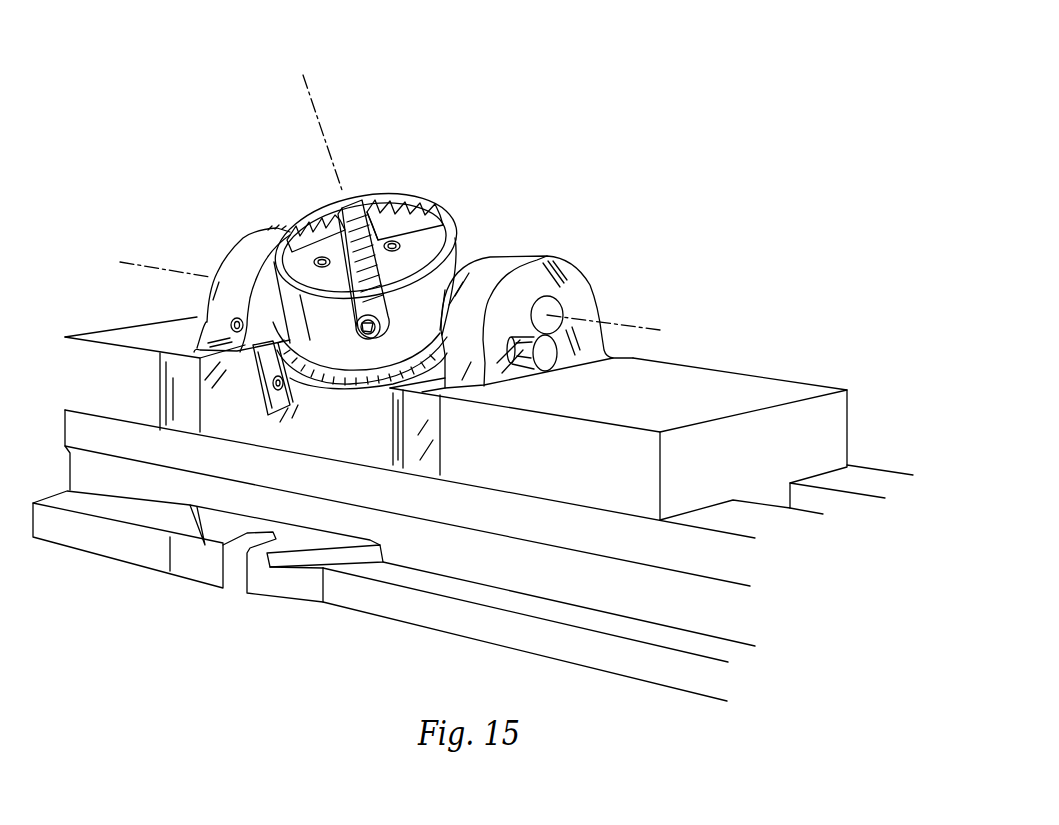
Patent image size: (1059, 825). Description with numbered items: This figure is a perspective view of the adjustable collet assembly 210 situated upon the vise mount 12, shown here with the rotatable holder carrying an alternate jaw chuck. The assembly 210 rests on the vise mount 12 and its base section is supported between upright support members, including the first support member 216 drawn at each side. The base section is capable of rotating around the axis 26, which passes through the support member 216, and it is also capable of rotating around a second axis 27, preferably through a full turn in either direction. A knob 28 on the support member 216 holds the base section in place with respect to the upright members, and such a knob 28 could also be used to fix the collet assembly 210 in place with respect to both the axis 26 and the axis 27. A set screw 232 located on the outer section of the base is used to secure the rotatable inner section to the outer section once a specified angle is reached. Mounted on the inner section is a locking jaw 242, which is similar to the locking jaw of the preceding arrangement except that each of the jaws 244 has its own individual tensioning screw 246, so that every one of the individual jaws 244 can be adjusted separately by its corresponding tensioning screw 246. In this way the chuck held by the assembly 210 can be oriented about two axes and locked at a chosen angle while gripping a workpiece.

The collet assembly 210 is at (250, 160).
The vise mount 12 is at (100, 540).
The first support member 216 is at (227, 258).
The axis 26 is at (628, 318).
The second axis 27 is at (318, 120).
The knob 28 is at (555, 372).
The set screw 232 is at (276, 395).
The locking jaw 242 is at (417, 317).
The jaws 244 is at (393, 213).
The tensioning screw 246 is at (370, 342).